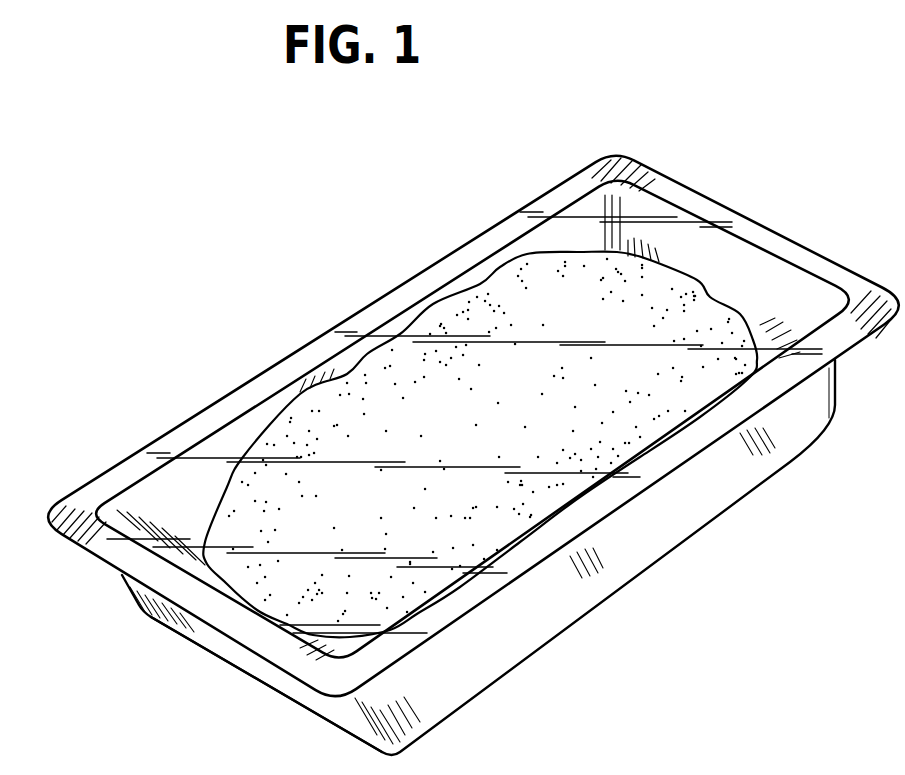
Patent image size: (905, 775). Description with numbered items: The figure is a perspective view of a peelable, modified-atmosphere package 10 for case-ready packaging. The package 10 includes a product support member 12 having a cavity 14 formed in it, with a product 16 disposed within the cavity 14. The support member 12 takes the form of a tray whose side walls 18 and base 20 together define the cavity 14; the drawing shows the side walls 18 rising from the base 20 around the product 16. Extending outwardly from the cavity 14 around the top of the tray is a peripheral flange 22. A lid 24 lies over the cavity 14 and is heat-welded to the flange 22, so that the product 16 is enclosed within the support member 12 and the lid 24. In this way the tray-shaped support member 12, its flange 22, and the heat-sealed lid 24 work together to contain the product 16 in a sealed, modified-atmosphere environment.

The package 10 is at (258, 246).
The product support member 12 is at (109, 577).
The cavity 14 is at (576, 234).
The product 16 is at (467, 417).
The side walls 18 is at (683, 520).
The base 20 is at (614, 608).
The peripheral flange 22 is at (771, 238).
The lid 24 is at (232, 447).